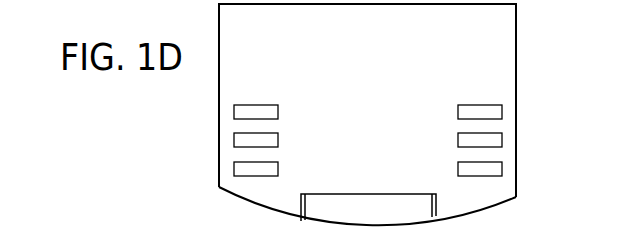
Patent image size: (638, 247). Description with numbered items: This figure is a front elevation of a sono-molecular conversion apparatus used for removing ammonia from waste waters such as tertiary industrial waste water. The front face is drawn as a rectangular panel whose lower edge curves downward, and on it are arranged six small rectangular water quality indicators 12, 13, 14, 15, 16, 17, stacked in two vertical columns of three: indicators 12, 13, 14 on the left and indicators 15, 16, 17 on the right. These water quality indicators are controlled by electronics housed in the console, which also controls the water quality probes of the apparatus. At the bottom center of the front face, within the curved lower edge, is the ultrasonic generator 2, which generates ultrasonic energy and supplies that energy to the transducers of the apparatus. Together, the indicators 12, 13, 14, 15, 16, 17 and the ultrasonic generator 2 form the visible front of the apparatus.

The ultrasonic generator 2 is at (368, 208).
The water quality indicator 12 is at (272, 112).
The water quality indicator 13 is at (272, 141).
The water quality indicator 14 is at (272, 169).
The water quality indicator 15 is at (464, 112).
The water quality indicator 16 is at (464, 141).
The water quality indicator 17 is at (464, 169).